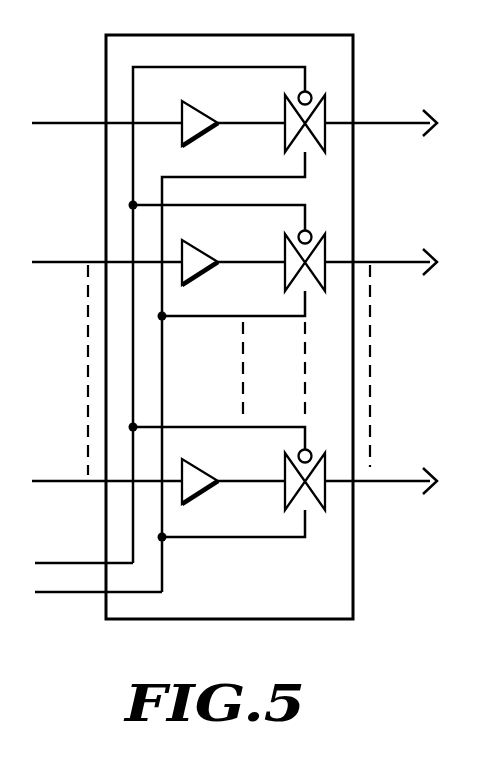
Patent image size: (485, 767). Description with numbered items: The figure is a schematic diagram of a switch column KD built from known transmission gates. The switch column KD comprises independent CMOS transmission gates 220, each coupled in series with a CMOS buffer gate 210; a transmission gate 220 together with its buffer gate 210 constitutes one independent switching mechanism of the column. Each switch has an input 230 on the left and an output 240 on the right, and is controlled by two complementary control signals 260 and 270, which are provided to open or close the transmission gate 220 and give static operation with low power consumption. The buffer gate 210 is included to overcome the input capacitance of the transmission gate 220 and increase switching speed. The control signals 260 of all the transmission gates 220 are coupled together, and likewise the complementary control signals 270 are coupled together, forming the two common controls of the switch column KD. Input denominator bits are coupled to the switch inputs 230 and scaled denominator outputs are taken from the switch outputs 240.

The CMOS buffer gate 210 is at (197, 470).
The CMOS transmission gate 220 is at (365, 548).
The input 230 is at (107, 290).
The output 240 is at (381, 303).
The control signal 260 is at (84, 547).
The complementary control signal 270 is at (98, 577).
The switch column KD is at (353, 587).